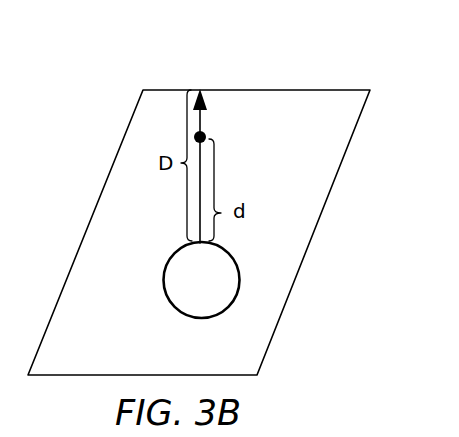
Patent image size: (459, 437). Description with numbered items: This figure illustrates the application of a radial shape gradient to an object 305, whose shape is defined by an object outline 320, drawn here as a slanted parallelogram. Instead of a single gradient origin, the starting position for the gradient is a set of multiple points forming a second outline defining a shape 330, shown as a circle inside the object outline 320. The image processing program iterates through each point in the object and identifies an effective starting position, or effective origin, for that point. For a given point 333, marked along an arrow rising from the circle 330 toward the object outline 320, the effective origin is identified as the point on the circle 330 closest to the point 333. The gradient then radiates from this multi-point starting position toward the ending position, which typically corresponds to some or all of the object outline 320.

The object outline 320 is at (143, 90).
The point 333 is at (206, 136).
The second outline defining a shape 330 is at (163, 280).
The object 305 is at (340, 343).